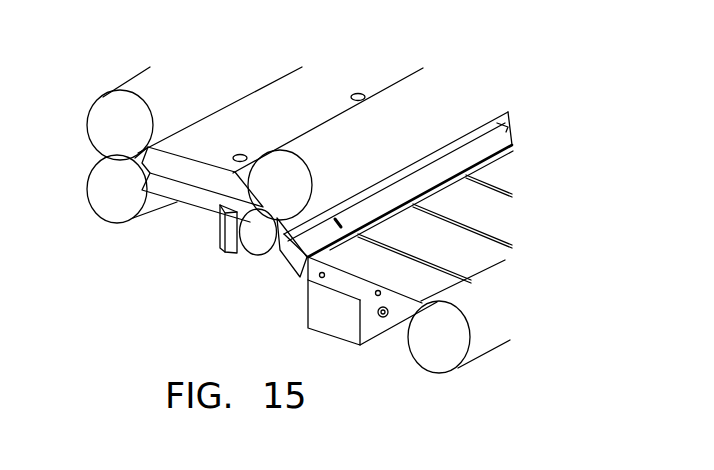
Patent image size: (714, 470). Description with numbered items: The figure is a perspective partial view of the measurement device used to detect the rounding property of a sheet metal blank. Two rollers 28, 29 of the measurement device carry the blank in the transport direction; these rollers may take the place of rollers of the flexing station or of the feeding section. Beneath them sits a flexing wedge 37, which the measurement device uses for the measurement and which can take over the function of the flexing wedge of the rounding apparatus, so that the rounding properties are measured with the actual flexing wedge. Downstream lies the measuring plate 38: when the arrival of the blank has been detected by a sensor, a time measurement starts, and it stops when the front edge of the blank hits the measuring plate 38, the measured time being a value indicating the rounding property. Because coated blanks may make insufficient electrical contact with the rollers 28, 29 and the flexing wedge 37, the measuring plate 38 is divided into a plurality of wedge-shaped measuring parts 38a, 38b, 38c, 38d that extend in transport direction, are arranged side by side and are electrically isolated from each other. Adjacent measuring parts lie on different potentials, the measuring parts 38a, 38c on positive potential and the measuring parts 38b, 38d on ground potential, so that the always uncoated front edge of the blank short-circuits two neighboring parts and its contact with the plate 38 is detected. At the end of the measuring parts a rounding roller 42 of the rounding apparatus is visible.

The roller 29 is at (387, 110).
The roller 28 is at (260, 243).
The flexing wedge 37 is at (282, 248).
The measuring plate 38 is at (333, 325).
The measuring part 38a is at (403, 276).
The measuring part 38b is at (447, 246).
The measuring part 38c is at (492, 216).
The measuring part 38d is at (557, 185).
The rounding roller 42 is at (428, 352).